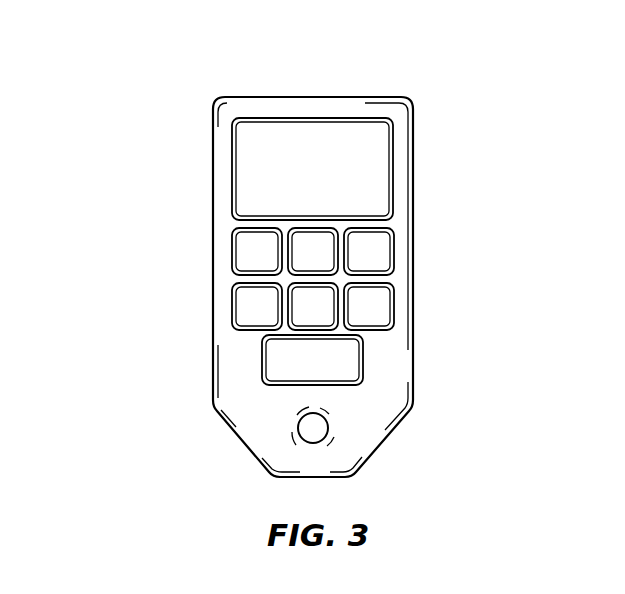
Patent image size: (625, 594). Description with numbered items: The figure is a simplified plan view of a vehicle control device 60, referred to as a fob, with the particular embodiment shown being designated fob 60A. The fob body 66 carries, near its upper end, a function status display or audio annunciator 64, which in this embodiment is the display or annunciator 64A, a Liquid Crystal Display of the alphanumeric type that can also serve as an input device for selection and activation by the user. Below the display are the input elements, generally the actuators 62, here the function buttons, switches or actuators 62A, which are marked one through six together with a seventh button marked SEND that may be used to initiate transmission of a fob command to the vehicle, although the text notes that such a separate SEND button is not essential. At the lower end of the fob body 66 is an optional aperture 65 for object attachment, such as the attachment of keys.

The vehicle control device 60 is at (474, 357).
The fob 60A is at (474, 157).
The actuators 62 is at (217, 309).
The function buttons, switches or actuators 62A is at (205, 225).
The function status display or audio annunciator 64 is at (231, 156).
The display or annunciator 64A is at (232, 147).
The aperture 65 is at (329, 428).
The fob body 66 is at (315, 97).